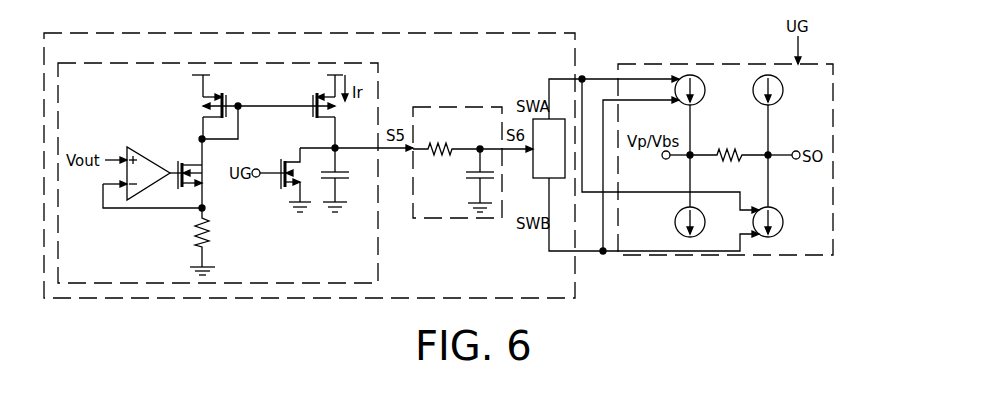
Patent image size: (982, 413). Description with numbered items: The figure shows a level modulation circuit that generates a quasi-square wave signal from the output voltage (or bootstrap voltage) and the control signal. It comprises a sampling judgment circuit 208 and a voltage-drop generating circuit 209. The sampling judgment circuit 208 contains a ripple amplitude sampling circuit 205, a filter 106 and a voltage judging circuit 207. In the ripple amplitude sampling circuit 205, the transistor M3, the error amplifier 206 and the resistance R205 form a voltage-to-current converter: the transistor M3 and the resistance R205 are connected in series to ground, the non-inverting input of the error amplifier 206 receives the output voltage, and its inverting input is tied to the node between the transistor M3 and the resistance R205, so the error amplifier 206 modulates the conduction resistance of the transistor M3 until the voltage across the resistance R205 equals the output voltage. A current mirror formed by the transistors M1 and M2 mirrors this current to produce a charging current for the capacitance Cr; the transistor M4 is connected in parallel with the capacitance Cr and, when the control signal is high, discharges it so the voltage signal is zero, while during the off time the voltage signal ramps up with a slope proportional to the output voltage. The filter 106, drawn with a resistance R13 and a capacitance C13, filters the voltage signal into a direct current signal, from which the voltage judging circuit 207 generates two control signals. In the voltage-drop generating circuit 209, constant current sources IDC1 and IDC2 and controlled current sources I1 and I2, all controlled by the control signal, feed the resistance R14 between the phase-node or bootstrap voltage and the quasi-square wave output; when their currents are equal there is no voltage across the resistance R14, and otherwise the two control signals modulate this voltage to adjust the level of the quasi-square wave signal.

The sampling judgment circuit 208 is at (334, 33).
The ripple amplitude sampling circuit 205 is at (241, 63).
The error amplifier 206 is at (149, 183).
The filter 106 is at (456, 107).
The voltage judging circuit 207 is at (538, 158).
The voltage-drop generating circuit 209 is at (730, 64).
The transistor M1 is at (221, 108).
The transistor M2 is at (290, 111).
The transistor M3 is at (189, 173).
The transistor M4 is at (281, 179).
The resistance R205 is at (223, 241).
The capacitance Cr is at (344, 180).
The resistor R13 is at (446, 137).
The capacitor C13 is at (464, 180).
The resistance R14 is at (729, 143).
The controlled current source I1 is at (699, 90).
The controlled current source I2 is at (777, 222).
The constant current source IDC1 is at (668, 222).
The constant current source IDC2 is at (789, 90).